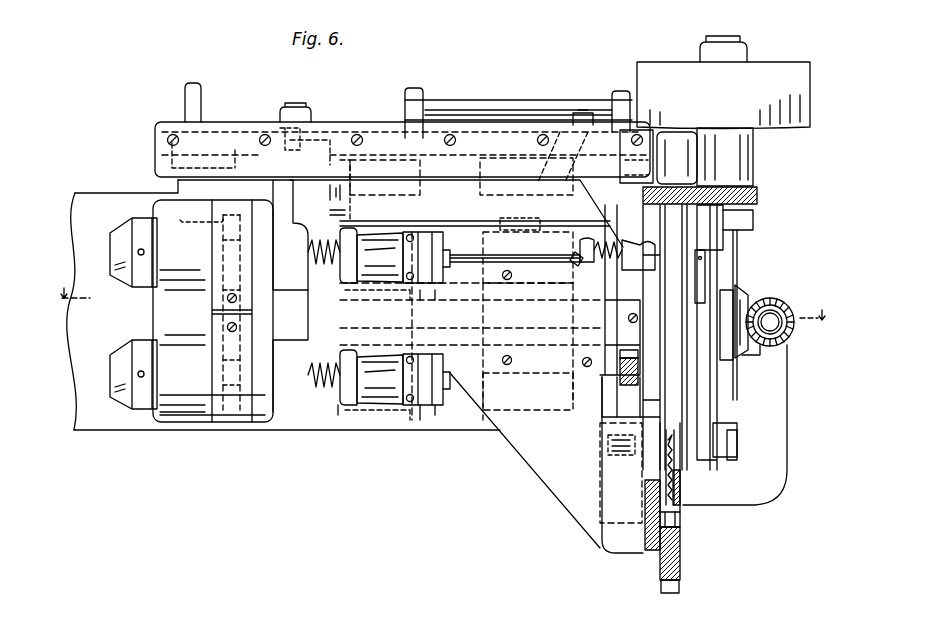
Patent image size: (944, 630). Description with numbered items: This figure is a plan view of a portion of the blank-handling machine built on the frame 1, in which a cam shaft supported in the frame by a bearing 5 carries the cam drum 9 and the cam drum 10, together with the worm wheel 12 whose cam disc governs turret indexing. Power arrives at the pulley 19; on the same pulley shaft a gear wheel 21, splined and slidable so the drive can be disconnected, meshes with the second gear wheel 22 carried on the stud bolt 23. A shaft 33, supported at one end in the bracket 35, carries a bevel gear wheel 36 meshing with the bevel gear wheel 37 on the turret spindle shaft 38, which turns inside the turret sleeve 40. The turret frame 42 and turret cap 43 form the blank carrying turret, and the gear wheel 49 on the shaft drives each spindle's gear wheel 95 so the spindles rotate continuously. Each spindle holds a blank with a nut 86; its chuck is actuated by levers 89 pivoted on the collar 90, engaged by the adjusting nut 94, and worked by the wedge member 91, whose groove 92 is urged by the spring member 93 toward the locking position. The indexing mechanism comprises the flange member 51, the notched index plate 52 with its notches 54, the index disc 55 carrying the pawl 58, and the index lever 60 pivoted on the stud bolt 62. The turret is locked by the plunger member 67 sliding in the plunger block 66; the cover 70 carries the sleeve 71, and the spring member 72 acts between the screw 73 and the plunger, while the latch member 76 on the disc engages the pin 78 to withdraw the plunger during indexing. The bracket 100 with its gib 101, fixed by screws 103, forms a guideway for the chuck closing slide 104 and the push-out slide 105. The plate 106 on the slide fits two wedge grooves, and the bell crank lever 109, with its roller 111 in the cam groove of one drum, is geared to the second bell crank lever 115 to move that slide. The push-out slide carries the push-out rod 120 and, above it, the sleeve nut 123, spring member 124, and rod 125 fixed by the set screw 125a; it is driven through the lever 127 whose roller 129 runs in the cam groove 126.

The frame 1 is at (400, 437).
The bearing 5 is at (450, 295).
The cam drum 9 is at (414, 318).
The cam drum 10 is at (484, 386).
The worm wheel 12 is at (612, 387).
The pulley 19 is at (776, 63).
The gear wheel 21 is at (758, 196).
The second gear wheel 22 is at (700, 188).
The stud bolt 23 is at (676, 132).
The shaft 33 is at (778, 330).
The bracket 35 is at (788, 394).
The bevel gear wheel 36 is at (791, 313).
The bevel gear wheel 37 is at (746, 296).
The turret spindle shaft 38 is at (510, 336).
The turret sleeve 40 is at (482, 274).
The turret frame 42 is at (264, 425).
The turret cap 43 is at (170, 424).
The gear wheel 49 is at (226, 274).
The flange member 51 is at (648, 252).
The index plate 52 is at (662, 396).
The notches 54 is at (652, 318).
The index disc 55 is at (683, 402).
The pawl 58 is at (708, 272).
The index lever 60 is at (718, 246).
The stud bolt 62 is at (600, 456).
The plunger block 66 is at (650, 498).
The plunger member 67 is at (681, 488).
The cover 70 is at (683, 526).
The sleeve 71 is at (682, 572).
The spring member 72 is at (683, 552).
The screw 73 is at (673, 594).
The latch member 76 is at (698, 403).
The pin 78 is at (690, 466).
The nut 86 is at (134, 220).
The levers 89 is at (392, 410).
The collar 90 is at (422, 410).
The wedge member 91 is at (339, 414).
The groove 92 is at (350, 342).
The spring member 93 is at (321, 413).
The adjusting nut 94 is at (438, 412).
The gear wheel 95 is at (222, 238).
The bracket 100 is at (199, 95).
The gib 101 is at (156, 140).
The screws 103 is at (543, 134).
The chuck closing slide 104 is at (278, 220).
The push-out slide 105 is at (640, 205).
The plate 106 is at (345, 222).
The bell crank lever 109 is at (421, 168).
The roller 111 is at (406, 218).
The second bell crank lever 115 is at (267, 132).
The push-out rod 120 is at (484, 256).
The sleeve nut 123 is at (588, 240).
The spring member 124 is at (603, 290).
The rod 125 is at (535, 256).
The set screw 125a is at (576, 268).
The cam groove 126 is at (526, 448).
The lever 127 is at (563, 132).
The roller 129 is at (532, 217).